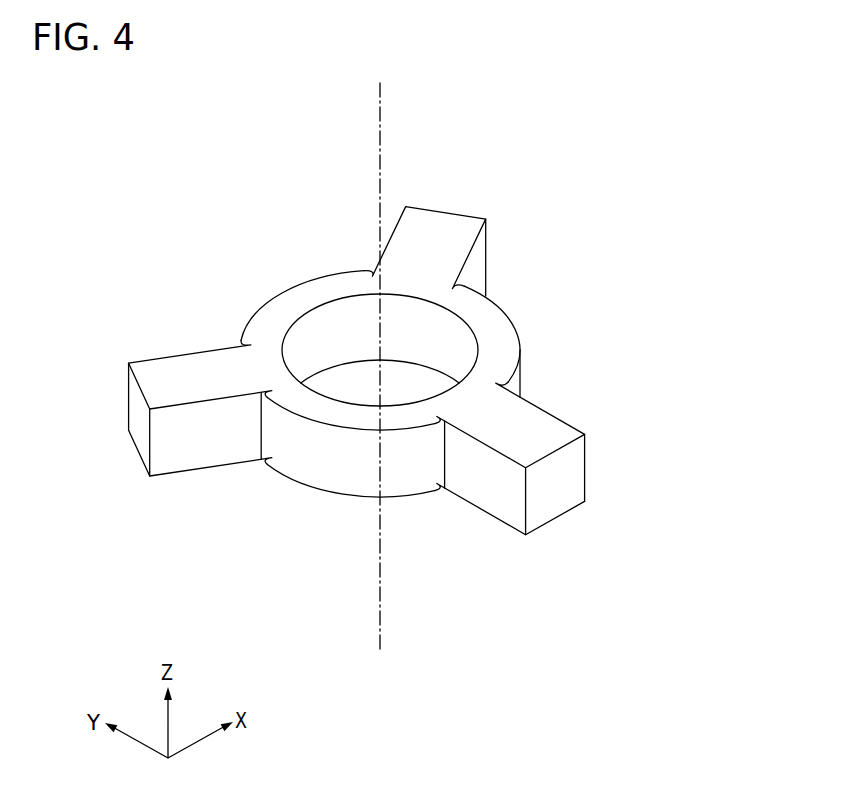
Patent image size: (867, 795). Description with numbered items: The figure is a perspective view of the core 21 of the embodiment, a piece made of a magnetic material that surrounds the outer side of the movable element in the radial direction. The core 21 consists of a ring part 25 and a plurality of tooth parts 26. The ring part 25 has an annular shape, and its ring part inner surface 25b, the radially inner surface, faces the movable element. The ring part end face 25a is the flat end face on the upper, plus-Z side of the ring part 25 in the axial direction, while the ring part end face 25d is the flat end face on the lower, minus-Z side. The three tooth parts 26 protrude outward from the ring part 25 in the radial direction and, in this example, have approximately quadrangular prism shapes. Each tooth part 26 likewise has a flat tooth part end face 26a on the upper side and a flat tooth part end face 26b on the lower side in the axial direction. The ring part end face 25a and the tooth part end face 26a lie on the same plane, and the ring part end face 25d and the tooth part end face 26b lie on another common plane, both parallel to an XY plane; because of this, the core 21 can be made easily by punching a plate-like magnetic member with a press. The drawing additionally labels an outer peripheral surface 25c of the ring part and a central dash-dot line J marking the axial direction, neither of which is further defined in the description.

The core 21 is at (656, 178).
The ring part 25 is at (424, 397).
The ring part end face 25a is at (315, 284).
The ring part inner surface 25b is at (446, 339).
The outer peripheral surface of annular portion 25c is at (302, 458).
The ring part end face 25d is at (403, 497).
The tooth part 26 is at (380, 379).
The tooth part end face 26a is at (441, 239).
The tooth part end face 26b is at (203, 473).
The rotation axis J is at (380, 110).